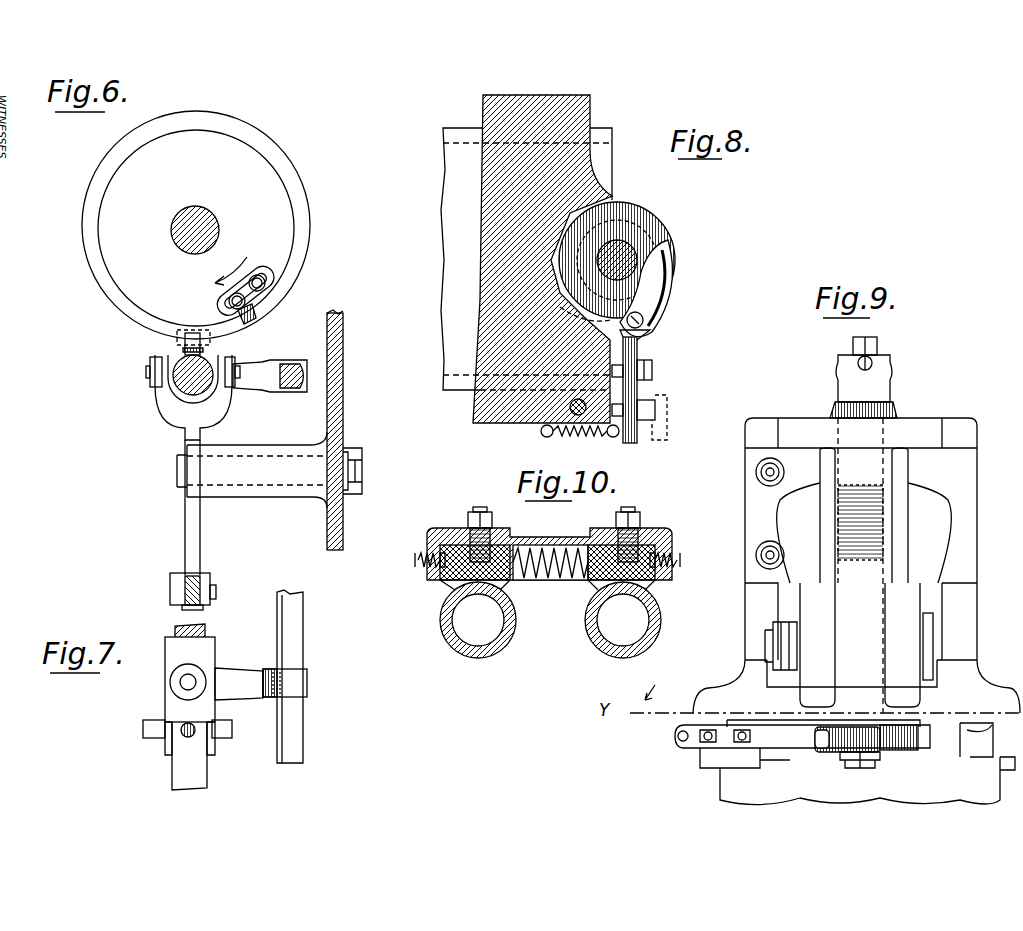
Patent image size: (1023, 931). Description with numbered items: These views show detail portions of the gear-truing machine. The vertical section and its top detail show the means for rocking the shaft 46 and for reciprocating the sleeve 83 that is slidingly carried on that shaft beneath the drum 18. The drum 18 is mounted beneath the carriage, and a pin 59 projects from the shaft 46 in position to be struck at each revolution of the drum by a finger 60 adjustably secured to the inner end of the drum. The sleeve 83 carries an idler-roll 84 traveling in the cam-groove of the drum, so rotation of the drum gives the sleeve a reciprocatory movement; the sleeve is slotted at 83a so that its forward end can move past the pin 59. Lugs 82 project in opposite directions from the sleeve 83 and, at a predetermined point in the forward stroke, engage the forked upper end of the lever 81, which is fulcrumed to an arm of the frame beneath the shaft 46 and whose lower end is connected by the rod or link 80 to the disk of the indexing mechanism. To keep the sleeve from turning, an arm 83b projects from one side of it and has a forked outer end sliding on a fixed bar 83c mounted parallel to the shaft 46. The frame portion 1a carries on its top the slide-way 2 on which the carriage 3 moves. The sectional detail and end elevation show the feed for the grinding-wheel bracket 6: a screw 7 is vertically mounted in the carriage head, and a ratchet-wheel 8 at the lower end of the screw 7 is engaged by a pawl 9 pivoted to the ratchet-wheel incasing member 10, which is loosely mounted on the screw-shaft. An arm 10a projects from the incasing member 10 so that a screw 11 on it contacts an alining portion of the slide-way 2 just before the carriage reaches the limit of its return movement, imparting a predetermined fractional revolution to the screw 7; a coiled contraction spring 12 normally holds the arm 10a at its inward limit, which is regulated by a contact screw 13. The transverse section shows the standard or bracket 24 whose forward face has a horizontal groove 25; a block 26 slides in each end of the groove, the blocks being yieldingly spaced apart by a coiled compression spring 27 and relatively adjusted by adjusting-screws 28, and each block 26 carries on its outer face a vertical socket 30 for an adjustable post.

In FIG. 6, the frame portion 1a is at (340, 394).
In FIG. 8, the slide-way 2 is at (526, 259).
In FIG. 9, the slide-way 2 is at (975, 745).
In FIG. 8, the carriage 3 is at (492, 372).
In FIG. 9, the carriage 3 is at (965, 673).
In FIG. 9, the bracket 6 is at (861, 565).
In FIG. 8, the screw 7 is at (628, 256).
In FIG. 9, the screw 7 is at (868, 354).
In FIG. 8, the ratchet-wheel 8 is at (658, 292).
In FIG. 9, the ratchet-wheel 8 is at (850, 728).
In FIG. 8, the pawl 9 is at (646, 320).
In FIG. 9, the pawl 9 is at (822, 748).
In FIG. 8, the ratchet-wheel incasing member 10 is at (643, 214).
In FIG. 9, the ratchet-wheel incasing member 10 is at (893, 750).
In FIG. 8, the arm 10a is at (640, 392).
In FIG. 9, the arm 10a is at (777, 748).
In FIG. 8, the screw 11 is at (648, 368).
In FIG. 9, the screw 11 is at (740, 745).
In FIG. 8, the coiled contraction spring 12 is at (580, 442).
In FIG. 8, the contact screw 13 is at (656, 412).
In FIG. 9, the contact screw 13 is at (704, 742).
In FIG. 6, the drum 18 is at (196, 225).
In FIG. 10, the standard or bracket 24 is at (447, 532).
In FIG. 10, the horizontal groove 25 is at (562, 578).
In FIG. 10, the block 26 is at (447, 578).
In FIG. 10, the coiled compression spring 27 is at (548, 545).
In FIG. 10, the adjusting-screws 28 is at (416, 562).
In FIG. 10, the vertical socket 30 is at (550, 619).
In FIG. 6, the shaft 46 is at (180, 385).
In FIG. 7, the shaft 46 is at (172, 770).
In FIG. 6, the pin 59 is at (208, 349).
In FIG. 7, the pin 59 is at (190, 725).
In FIG. 6, the finger 60 is at (260, 318).
In FIG. 6, the rod or link 80 is at (170, 595).
In FIG. 6, the lever 81 is at (200, 532).
In FIG. 6, the lugs 82 is at (147, 372).
In FIG. 7, the lugs 82 is at (143, 731).
In FIG. 6, the sleeve 83 is at (208, 388).
In FIG. 7, the sleeve 83 is at (190, 689).
In FIG. 7, the slot 83a is at (192, 742).
In FIG. 6, the arm 83b is at (272, 360).
In FIG. 7, the arm 83b is at (247, 684).
In FIG. 6, the fixed bar 83c is at (294, 390).
In FIG. 7, the fixed bar 83c is at (290, 645).
In FIG. 6, the idler-roll 84 is at (183, 343).
In FIG. 7, the idler-roll 84 is at (198, 676).